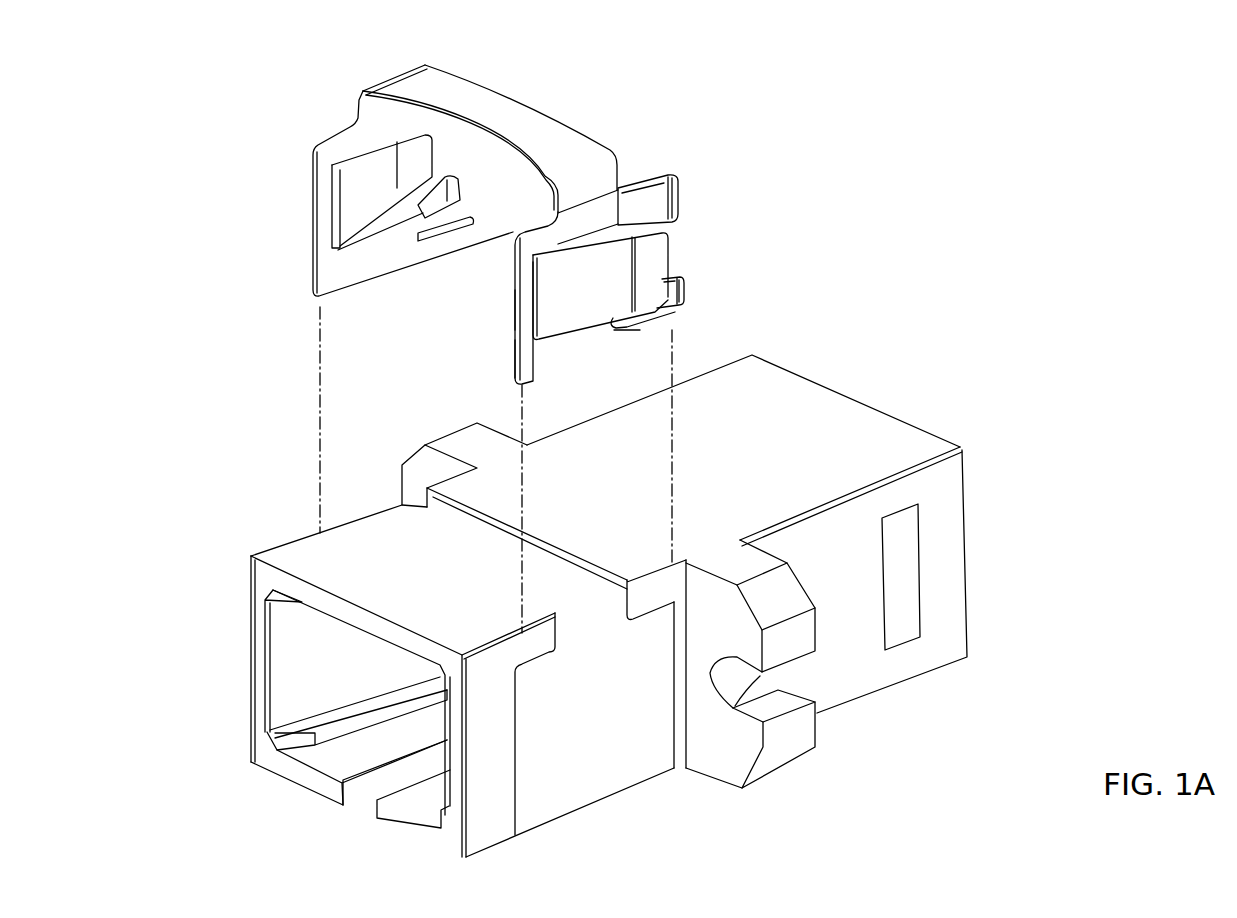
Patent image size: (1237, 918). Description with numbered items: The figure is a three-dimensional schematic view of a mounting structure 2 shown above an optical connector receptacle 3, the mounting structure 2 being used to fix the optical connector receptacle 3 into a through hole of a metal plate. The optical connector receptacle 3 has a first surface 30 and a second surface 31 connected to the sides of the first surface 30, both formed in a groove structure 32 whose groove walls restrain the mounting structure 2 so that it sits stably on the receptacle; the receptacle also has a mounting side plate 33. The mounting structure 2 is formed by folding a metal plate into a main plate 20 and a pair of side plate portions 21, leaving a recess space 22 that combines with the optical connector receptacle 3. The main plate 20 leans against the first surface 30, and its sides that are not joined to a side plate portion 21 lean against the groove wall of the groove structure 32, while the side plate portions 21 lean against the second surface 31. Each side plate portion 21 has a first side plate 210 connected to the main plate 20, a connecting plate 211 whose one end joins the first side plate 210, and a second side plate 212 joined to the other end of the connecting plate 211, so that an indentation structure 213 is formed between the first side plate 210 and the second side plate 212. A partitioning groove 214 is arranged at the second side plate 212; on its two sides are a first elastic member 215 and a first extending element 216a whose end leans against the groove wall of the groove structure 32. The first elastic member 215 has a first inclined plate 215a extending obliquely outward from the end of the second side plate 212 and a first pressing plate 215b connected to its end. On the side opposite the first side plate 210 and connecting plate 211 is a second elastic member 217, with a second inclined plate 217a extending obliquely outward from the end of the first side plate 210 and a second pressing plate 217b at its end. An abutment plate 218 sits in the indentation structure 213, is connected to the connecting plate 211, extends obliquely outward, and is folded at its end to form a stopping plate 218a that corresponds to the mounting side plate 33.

The mounting structure 2 is at (581, 319).
The main plate 20 is at (523, 117).
The side plate portion 21 is at (298, 125).
The recess space 22 is at (522, 212).
The first side plate 210 is at (548, 236).
The connecting plate 211 is at (525, 305).
The second side plate 212 is at (540, 355).
The indentation structure 213 is at (628, 235).
The partitioning groove 214 is at (652, 273).
The first elastic member 215 is at (804, 295).
The first inclined plate 215a is at (662, 297).
The first pressing plate 215b is at (677, 290).
The first extending element 216a is at (662, 323).
The second elastic member 217 is at (779, 200).
The second inclined plate 217a is at (650, 200).
The second pressing plate 217b is at (676, 198).
The abutment plate 218 is at (587, 293).
The stopping plate 218a is at (623, 332).
The optical connector receptacle 3 is at (574, 606).
The first surface 30 is at (430, 540).
The second surface 31 is at (563, 780).
The groove structure 32 is at (486, 526).
The mounting side plate 33 is at (740, 740).